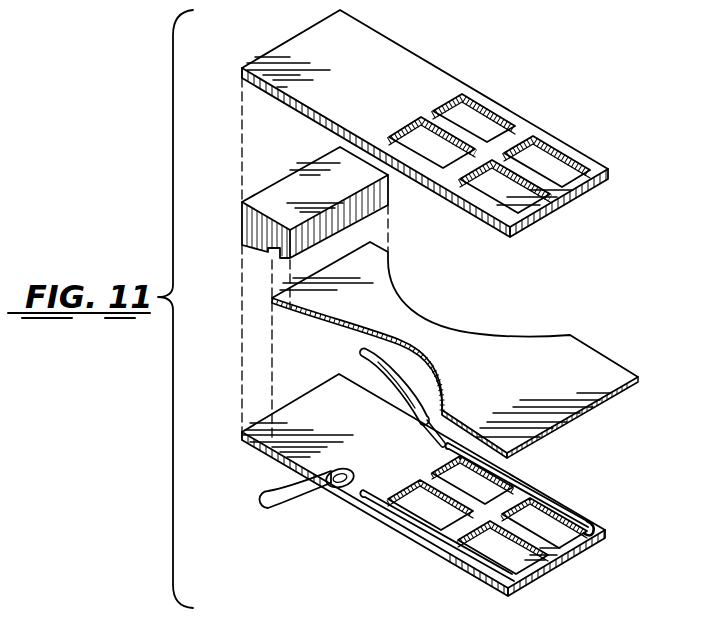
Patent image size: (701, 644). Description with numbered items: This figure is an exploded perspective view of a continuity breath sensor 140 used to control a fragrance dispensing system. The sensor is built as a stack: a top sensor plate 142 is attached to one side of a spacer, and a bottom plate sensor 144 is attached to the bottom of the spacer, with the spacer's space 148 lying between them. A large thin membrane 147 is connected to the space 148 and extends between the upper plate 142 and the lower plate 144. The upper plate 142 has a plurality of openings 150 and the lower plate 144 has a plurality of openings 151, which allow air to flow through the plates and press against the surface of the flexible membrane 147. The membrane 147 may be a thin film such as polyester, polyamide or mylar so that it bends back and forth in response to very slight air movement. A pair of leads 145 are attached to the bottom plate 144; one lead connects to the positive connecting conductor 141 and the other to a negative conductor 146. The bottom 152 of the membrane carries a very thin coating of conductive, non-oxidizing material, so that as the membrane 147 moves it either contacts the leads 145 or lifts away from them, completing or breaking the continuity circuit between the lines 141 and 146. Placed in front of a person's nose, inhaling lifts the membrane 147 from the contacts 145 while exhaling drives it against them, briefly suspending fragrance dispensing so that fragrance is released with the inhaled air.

The continuity breath sensor 140 is at (110, 304).
The connecting conductor 141 is at (287, 493).
The top sensor plate 142 is at (429, 123).
The bottom plate sensor 144 is at (446, 485).
The leads 145 is at (553, 502).
The negative conductor 146 is at (360, 357).
The thin membrane 147 is at (455, 350).
The space 148 is at (278, 263).
The openings 150 is at (463, 122).
The openings 151 is at (485, 493).
The bottom of the membrane 152 is at (570, 426).